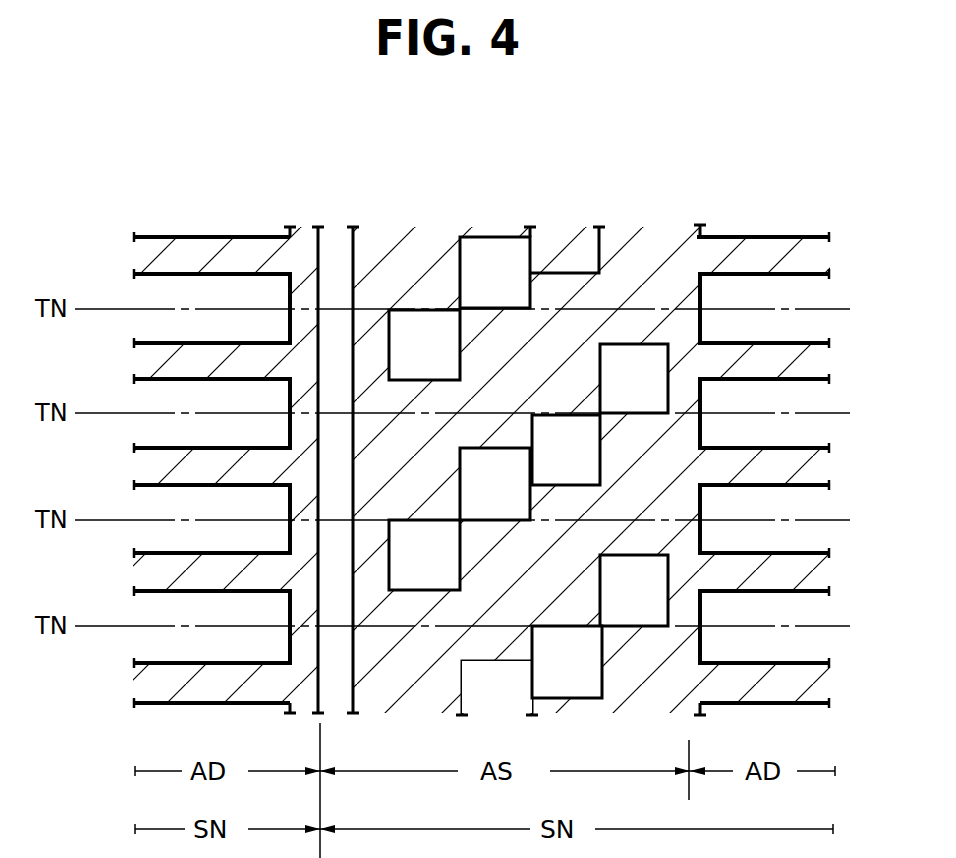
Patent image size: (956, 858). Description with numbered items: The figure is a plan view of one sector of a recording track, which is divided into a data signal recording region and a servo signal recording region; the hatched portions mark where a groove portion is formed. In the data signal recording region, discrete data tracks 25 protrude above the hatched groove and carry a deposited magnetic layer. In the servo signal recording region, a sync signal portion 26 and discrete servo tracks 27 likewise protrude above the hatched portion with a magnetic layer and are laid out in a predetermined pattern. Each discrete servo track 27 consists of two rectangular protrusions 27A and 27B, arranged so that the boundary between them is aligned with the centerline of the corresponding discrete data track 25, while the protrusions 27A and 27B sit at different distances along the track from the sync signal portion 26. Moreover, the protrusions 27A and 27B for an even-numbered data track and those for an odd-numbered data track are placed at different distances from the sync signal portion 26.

The discrete data track 25 is at (244, 397).
The sync signal portion 26 is at (333, 243).
The discrete servo track 27 is at (520, 462).
The rectangular protrusion 27A is at (564, 431).
The rectangular protrusion 27B is at (495, 504).